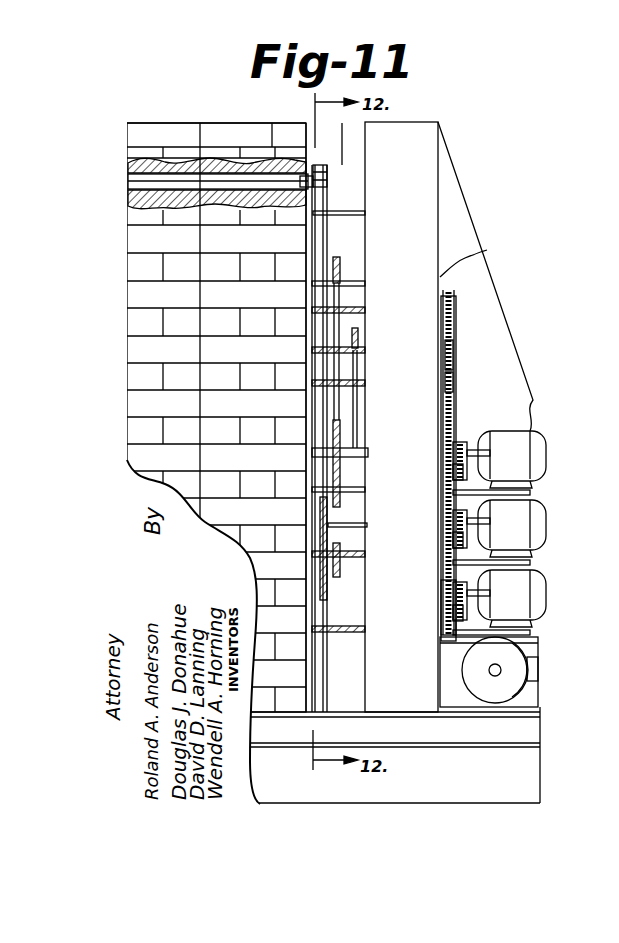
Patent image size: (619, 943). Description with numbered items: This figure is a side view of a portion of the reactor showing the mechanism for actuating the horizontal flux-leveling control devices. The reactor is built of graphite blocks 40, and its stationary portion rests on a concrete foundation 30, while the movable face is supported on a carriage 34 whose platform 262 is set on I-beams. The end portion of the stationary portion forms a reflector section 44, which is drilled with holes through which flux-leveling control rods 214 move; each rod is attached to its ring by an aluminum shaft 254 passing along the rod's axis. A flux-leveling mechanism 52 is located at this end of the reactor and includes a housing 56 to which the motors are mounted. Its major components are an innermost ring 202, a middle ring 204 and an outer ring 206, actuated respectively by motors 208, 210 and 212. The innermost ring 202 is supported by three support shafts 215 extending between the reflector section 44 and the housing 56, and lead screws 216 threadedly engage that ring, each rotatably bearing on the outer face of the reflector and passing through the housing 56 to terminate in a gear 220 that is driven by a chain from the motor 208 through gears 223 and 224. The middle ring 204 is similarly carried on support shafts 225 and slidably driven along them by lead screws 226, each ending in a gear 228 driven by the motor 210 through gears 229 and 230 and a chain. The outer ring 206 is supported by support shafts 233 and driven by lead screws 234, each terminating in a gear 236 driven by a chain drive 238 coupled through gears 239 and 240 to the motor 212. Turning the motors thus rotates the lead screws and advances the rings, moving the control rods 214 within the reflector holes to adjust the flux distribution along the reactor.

The concrete foundation 30 is at (545, 780).
The carriage 34 is at (540, 728).
The graphite blocks 40 is at (222, 137).
The end portion of the stationary portion 44 is at (163, 124).
The flux-leveling mechanism 52 is at (340, 170).
The housing 56 is at (418, 136).
The innermost ring 202 is at (355, 403).
The middle ring 204 is at (340, 517).
The outer ring 206 is at (322, 243).
The motor 208 is at (535, 446).
The motor 210 is at (535, 524).
The motor 212 is at (535, 596).
The flux-leveling control rod 214 is at (223, 185).
The support shaft 215 is at (352, 452).
The lead screw 216 is at (350, 383).
The gear 220 is at (453, 381).
The gear 223 is at (465, 474).
The gear 224 is at (460, 442).
The support shaft 225 is at (352, 283).
The lead screw 226 is at (355, 350).
The gear 228 is at (455, 348).
The gear 229 is at (465, 548).
The gear 230 is at (465, 520).
The support shaft 233 is at (355, 213).
The lead screw 234 is at (352, 310).
The gear 236 is at (458, 305).
The chain drive 238 is at (455, 364).
The gear 239 is at (465, 618).
The gear 240 is at (455, 595).
The shaft 254 is at (338, 178).
The platform 262 is at (520, 704).